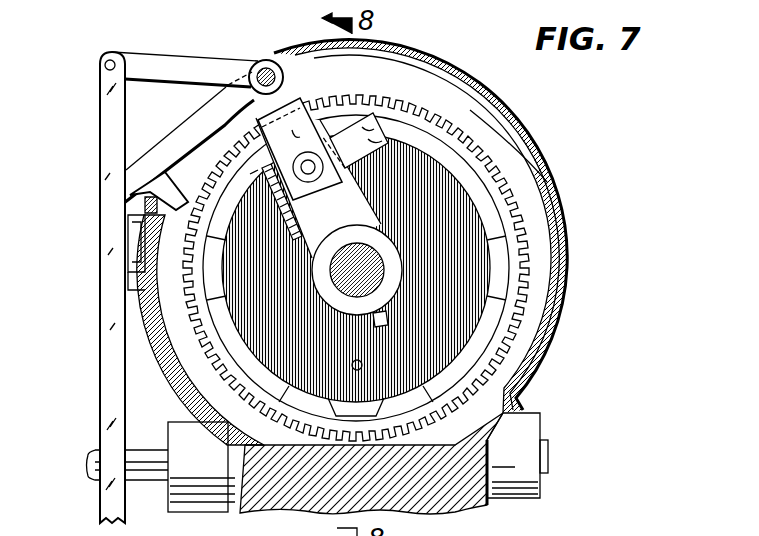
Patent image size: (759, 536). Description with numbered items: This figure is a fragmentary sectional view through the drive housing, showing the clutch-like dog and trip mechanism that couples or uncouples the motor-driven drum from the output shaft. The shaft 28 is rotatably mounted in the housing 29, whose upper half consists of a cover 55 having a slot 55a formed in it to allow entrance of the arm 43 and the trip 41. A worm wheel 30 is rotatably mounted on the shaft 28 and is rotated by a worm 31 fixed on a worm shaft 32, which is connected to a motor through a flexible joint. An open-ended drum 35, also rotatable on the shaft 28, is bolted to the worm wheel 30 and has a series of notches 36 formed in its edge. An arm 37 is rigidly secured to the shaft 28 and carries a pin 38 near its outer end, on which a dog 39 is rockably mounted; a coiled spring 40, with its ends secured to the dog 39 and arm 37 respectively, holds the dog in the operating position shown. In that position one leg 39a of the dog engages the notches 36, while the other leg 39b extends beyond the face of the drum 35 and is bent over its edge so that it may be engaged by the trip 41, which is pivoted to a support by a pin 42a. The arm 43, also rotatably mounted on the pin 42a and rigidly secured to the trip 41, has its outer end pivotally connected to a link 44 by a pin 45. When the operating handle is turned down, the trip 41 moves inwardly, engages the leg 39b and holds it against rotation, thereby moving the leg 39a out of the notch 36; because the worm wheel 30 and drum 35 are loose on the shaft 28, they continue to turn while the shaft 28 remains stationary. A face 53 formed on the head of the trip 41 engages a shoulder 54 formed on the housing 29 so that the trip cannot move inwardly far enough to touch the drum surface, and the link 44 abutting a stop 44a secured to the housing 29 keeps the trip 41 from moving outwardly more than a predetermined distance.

The shaft 28 is at (385, 289).
The housing 29 is at (604, 195).
The worm wheel 30 is at (530, 350).
The worm 31 is at (530, 400).
The worm shaft 32 is at (87, 456).
The open-ended drum 35 is at (475, 365).
The notches 36 is at (548, 168).
The arm 37 is at (497, 117).
The pin 38 is at (302, 132).
The dog 39 is at (338, 140).
The leg 39a is at (360, 182).
The leg 39b is at (298, 134).
The coiled spring 40 is at (275, 221).
The trip 41 is at (168, 146).
The pin 42a is at (257, 66).
The arm 43 is at (172, 60).
The link 44 is at (117, 161).
The stop 44a is at (143, 256).
The pin 45 is at (104, 64).
The face 53 is at (148, 202).
The shoulder 54 is at (142, 218).
The cover 55 is at (593, 196).
The slot 55a is at (205, 102).